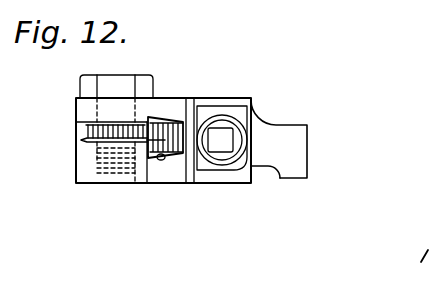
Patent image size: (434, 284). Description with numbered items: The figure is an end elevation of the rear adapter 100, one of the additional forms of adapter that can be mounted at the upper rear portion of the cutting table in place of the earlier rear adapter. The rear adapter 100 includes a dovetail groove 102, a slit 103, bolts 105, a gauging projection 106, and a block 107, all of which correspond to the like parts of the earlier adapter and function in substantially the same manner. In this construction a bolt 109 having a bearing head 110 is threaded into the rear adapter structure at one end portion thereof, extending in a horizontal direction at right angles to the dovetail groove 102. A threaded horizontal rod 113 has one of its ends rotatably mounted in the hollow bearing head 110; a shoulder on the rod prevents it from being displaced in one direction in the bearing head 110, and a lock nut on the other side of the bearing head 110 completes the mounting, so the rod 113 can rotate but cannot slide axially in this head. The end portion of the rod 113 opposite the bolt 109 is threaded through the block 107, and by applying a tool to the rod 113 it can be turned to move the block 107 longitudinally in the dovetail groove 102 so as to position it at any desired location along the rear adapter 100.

The rear adapter 100 is at (252, 99).
The bolts 105 is at (107, 88).
The bolt 109 is at (85, 140).
The slit 103 is at (126, 138).
The block 107 is at (148, 115).
The dovetail groove 102 is at (152, 163).
The threaded horizontal rod 113 is at (220, 132).
The gauging projection 106 is at (299, 147).
The bearing head 110 is at (278, 170).